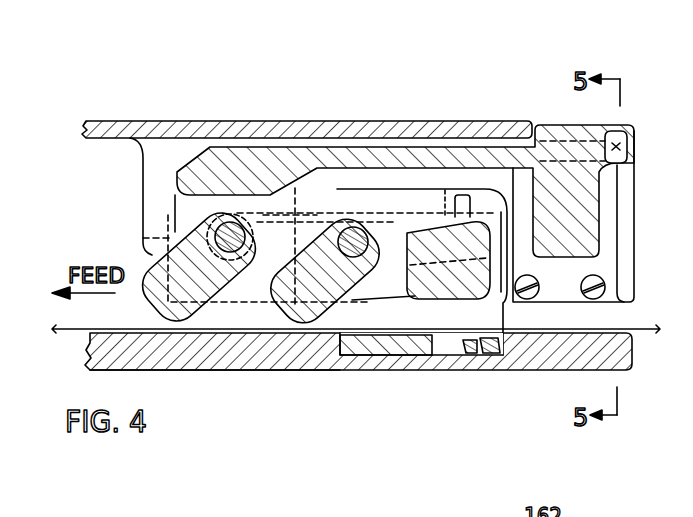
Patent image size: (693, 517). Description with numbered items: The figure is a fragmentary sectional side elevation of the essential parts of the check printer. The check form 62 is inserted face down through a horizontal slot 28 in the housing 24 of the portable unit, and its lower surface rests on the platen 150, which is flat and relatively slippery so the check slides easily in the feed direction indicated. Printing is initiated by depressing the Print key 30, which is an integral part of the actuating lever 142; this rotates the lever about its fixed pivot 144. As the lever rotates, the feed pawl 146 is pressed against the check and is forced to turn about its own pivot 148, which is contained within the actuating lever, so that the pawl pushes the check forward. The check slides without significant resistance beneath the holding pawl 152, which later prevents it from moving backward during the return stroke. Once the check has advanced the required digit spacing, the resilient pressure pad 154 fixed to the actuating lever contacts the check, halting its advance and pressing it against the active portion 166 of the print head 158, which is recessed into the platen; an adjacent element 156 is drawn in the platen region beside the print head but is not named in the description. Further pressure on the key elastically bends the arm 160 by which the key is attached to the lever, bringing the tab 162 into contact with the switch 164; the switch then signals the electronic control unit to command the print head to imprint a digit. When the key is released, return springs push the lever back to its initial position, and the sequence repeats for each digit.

The housing 24 is at (128, 121).
The horizontal slot 28 is at (612, 325).
The Print key 30 is at (578, 125).
The check form 62 is at (648, 340).
The actuating lever 142 is at (340, 190).
The fixed pivot 144 is at (222, 222).
The feed pawl 146 is at (327, 215).
The pivot 148 is at (366, 228).
The platen 150 is at (282, 370).
The holding pawl 152 is at (216, 232).
The resilient pressure pad 154 is at (488, 353).
The insert block 156 is at (450, 349).
The print head 158 is at (392, 370).
The arm 160 is at (440, 150).
The tab 162 is at (620, 128).
The switch 164 is at (598, 264).
The active portion of the print head 166 is at (415, 210).